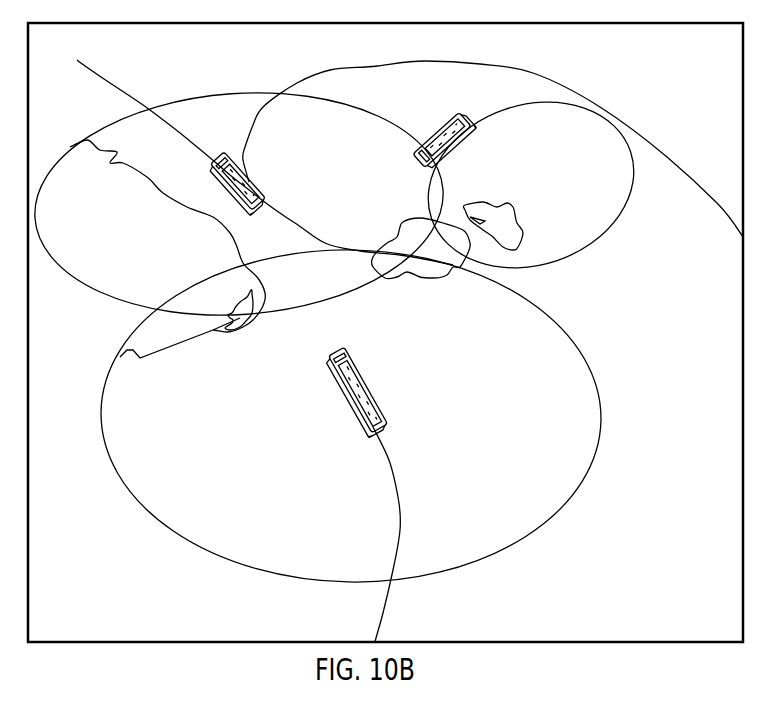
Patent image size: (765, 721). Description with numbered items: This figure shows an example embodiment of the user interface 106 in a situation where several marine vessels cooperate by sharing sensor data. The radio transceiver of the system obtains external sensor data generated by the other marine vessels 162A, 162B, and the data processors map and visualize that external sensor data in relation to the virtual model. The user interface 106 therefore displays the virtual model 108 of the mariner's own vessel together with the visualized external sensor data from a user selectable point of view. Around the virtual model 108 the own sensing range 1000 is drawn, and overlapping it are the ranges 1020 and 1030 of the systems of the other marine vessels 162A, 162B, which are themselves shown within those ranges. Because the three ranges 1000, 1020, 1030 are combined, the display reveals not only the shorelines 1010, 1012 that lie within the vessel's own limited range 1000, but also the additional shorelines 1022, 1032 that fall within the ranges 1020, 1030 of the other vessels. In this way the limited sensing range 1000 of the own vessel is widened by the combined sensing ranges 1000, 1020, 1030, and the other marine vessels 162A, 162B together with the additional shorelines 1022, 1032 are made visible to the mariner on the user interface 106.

The user interface 106 is at (392, 59).
The range 1020 is at (227, 95).
The range 1030 is at (538, 73).
The range 1000 is at (140, 505).
The additional shoreline 1022 is at (240, 243).
The shoreline 1010 is at (172, 347).
The shoreline 1012 is at (430, 280).
The additional shoreline 1032 is at (518, 213).
The other marine vessel 162A is at (228, 186).
The other marine vessel 162B is at (450, 148).
The virtual model 108 is at (347, 398).